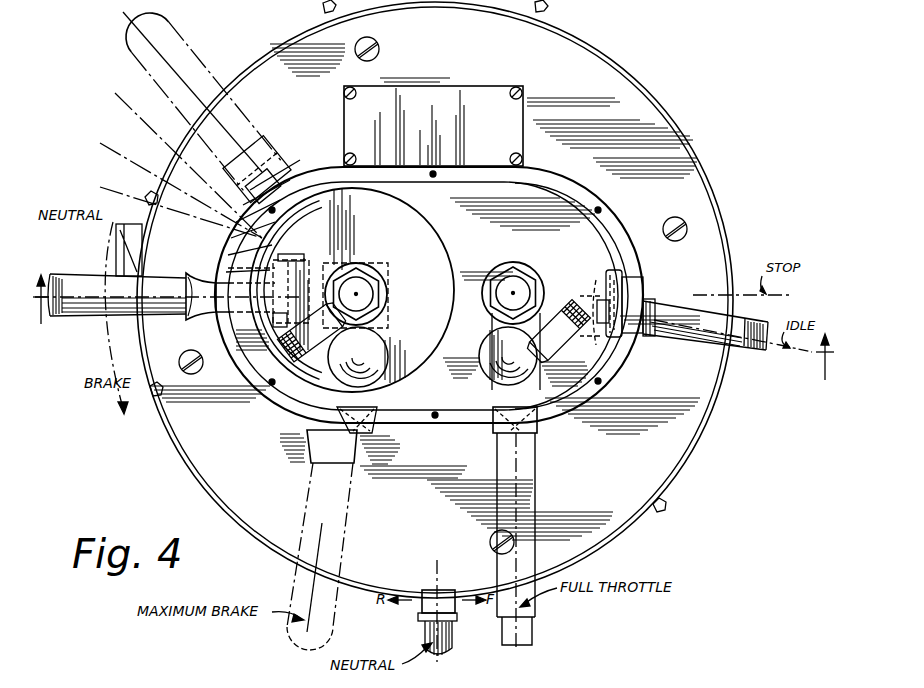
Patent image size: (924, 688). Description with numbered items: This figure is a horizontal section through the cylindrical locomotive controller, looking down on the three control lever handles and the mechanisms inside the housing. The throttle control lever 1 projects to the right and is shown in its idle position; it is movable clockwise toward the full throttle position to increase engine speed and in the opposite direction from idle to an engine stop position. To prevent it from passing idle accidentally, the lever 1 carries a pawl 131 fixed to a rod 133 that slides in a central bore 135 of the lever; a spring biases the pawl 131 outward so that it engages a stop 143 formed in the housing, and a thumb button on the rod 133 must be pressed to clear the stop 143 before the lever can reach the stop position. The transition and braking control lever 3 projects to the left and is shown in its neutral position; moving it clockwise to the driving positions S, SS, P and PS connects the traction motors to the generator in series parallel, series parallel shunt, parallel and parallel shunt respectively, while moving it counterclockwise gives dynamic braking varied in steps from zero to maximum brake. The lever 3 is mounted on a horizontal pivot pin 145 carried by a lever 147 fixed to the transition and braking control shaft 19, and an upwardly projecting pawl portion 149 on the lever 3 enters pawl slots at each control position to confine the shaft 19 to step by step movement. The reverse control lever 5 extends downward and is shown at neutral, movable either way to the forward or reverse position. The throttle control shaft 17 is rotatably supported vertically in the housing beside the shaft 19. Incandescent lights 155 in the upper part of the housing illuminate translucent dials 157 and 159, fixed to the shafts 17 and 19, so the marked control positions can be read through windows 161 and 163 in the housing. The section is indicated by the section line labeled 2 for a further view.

The throttle control lever 1 is at (748, 350).
The section line 2- 2 is at (433, 329).
The transition and braking control lever 3 is at (105, 318).
The reverse control lever 5 is at (452, 634).
The throttle control shaft 17 is at (508, 290).
The transition and braking control shaft 19 is at (357, 292).
The pawl 131 is at (640, 292).
The rod 133 is at (664, 340).
The central bore 135 is at (735, 354).
The stop 143 is at (640, 262).
The horizontal pivot pin 145 is at (290, 268).
The lever 147 is at (340, 268).
The pawl portion 149 is at (210, 284).
The incandescent lights 155 is at (495, 350).
The translucent dial 157 is at (565, 375).
The translucent dial 159 is at (312, 398).
The window 161 is at (537, 434).
The window 163 is at (373, 432).
The parallel shunt position PS is at (142, 40).
The parallel position P is at (118, 104).
The series parallel shunt position SS is at (100, 152).
The series parallel position S is at (82, 196).